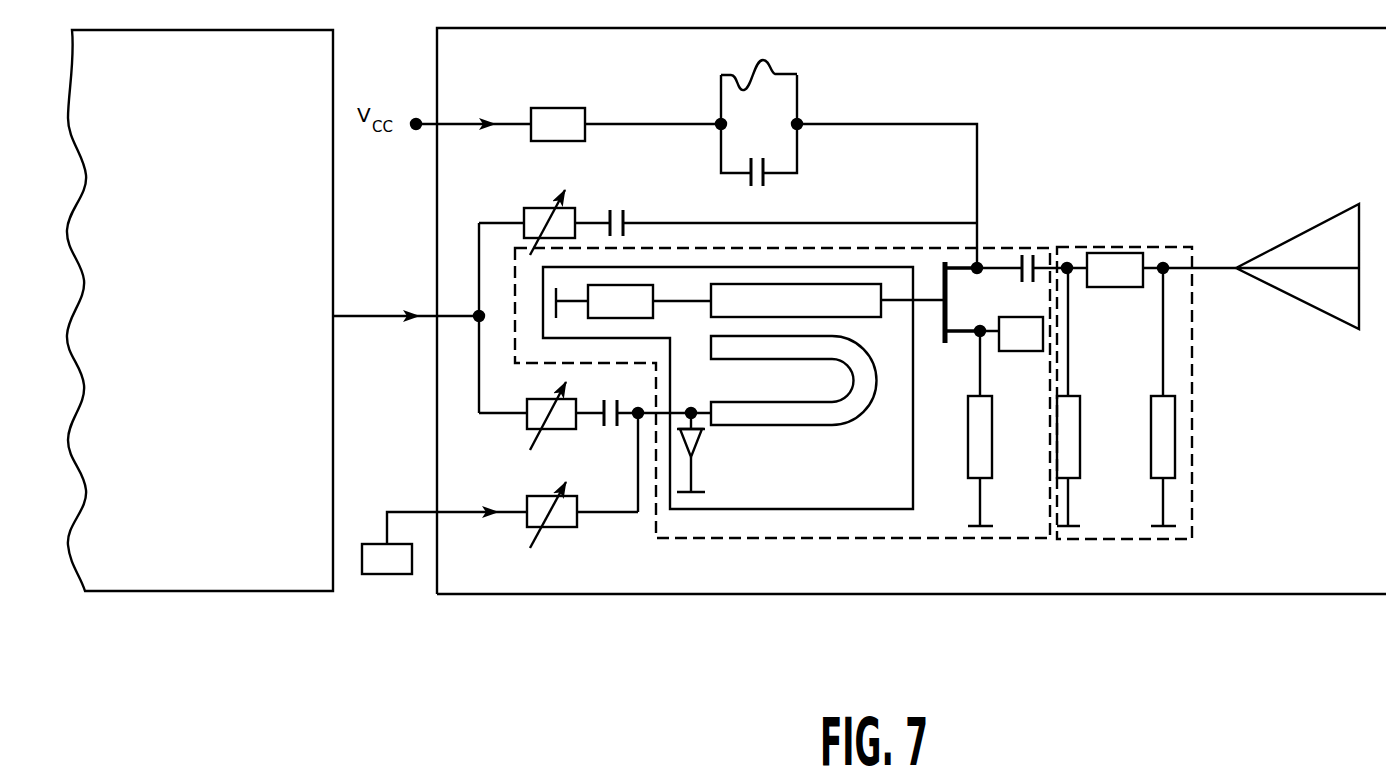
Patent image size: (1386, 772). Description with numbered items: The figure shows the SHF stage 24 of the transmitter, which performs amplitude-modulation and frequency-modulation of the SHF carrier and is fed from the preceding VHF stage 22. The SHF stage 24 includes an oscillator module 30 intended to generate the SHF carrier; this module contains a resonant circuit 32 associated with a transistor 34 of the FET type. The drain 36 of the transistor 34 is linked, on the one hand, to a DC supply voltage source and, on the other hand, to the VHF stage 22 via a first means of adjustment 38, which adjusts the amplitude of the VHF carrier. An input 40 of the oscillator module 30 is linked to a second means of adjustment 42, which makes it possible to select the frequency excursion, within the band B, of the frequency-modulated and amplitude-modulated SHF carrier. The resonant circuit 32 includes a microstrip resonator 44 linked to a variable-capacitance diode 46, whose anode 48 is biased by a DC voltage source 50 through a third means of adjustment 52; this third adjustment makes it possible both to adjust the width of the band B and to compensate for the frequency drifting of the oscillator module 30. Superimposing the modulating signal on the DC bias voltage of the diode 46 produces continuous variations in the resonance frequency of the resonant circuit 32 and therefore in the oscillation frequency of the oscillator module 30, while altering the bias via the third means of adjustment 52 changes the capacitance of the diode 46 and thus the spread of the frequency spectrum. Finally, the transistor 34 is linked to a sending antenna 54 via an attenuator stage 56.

The VHF stage 22 is at (194, 598).
The SHF stage 24 is at (1163, 599).
The oscillator module 30 is at (892, 547).
The resonant circuit 32 is at (762, 515).
The transistor 34 is at (965, 337).
The drain 36 is at (988, 262).
The first means of adjustment 38 is at (540, 206).
The input 40 is at (650, 415).
The second means of adjustment 42 is at (525, 418).
The microstrip resonator 44 is at (877, 320).
The variable-capacitance diode 46 is at (704, 440).
The anode 48 is at (693, 410).
The DC voltage source 50 is at (389, 576).
The third means of adjustment 52 is at (526, 520).
The sending antenna 54 is at (1323, 315).
The attenuator stage 56 is at (1208, 469).